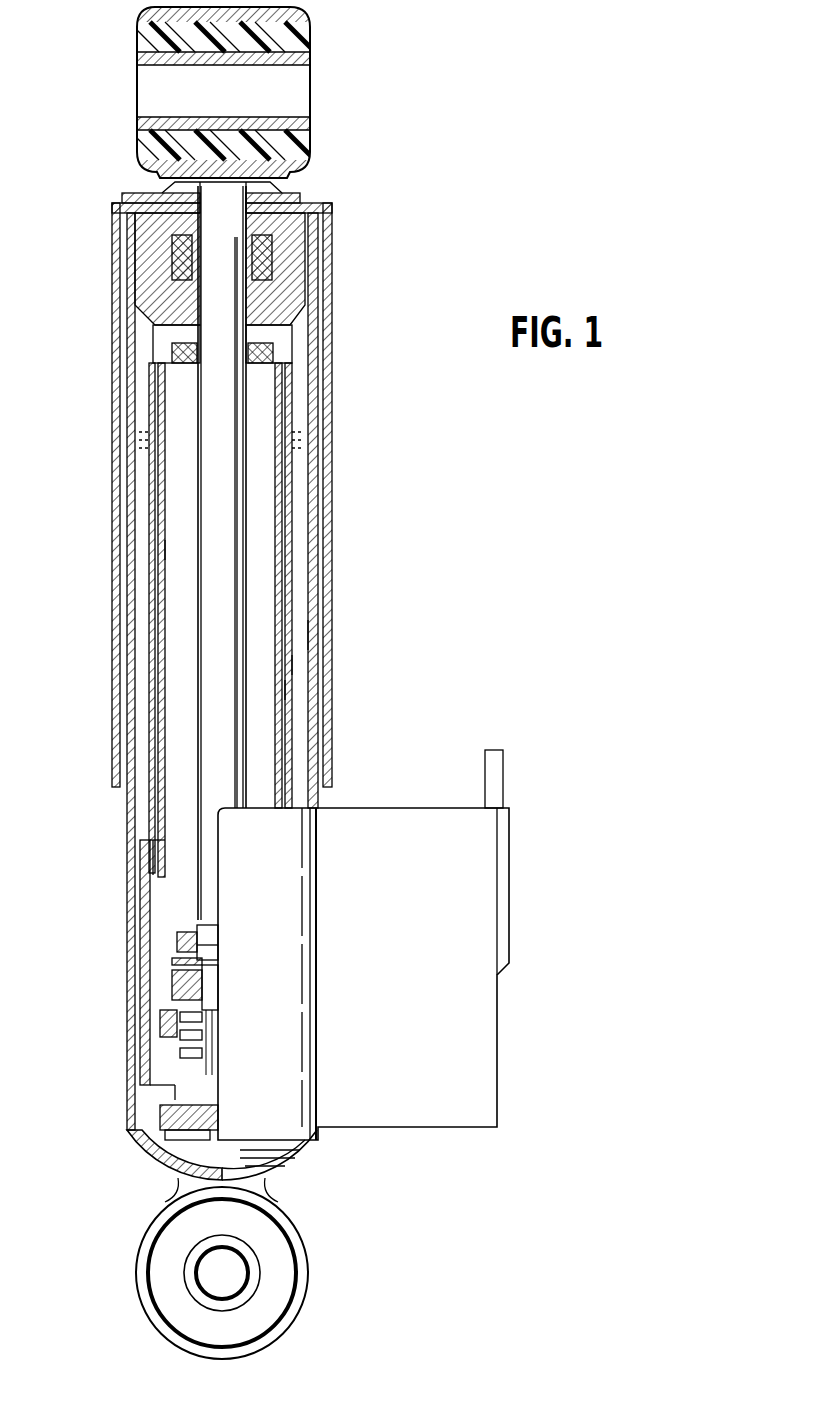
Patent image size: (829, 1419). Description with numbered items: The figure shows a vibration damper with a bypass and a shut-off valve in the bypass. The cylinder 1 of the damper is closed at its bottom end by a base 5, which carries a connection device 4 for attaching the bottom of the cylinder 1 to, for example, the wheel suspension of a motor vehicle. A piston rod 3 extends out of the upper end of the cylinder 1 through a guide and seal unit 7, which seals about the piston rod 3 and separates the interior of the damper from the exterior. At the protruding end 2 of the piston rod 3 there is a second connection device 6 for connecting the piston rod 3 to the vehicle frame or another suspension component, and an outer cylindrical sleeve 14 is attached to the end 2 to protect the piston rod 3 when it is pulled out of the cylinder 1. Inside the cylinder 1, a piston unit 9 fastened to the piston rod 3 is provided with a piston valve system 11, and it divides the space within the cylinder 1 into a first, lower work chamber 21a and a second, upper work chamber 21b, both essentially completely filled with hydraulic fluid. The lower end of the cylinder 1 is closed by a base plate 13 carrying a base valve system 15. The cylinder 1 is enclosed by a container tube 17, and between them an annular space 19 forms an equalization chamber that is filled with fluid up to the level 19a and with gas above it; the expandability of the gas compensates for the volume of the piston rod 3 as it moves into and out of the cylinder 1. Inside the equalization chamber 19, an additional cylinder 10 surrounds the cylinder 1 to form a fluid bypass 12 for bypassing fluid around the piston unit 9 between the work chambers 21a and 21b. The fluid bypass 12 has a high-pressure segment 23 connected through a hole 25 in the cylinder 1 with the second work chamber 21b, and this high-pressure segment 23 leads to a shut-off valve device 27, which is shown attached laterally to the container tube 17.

The cylinder 1 is at (290, 637).
The protruding end of the piston rod 2 is at (225, 203).
The piston rod 3 is at (228, 493).
The connection device 4 is at (296, 1237).
The base 5 is at (143, 1145).
The second connection device 6 is at (305, 48).
The guide and seal unit 7 is at (288, 304).
The piston unit 9 is at (170, 1002).
The additional cylinder 10 is at (292, 664).
The piston valve system 11 is at (172, 958).
The fluid bypass 12 is at (292, 688).
The base plate 13 is at (160, 1120).
The outer cylindrical sleeve 14 is at (112, 618).
The base valve system 15 is at (177, 1173).
The container tube 17 is at (313, 537).
The annular space 19 is at (297, 577).
The level 19a is at (143, 435).
The first work chamber 21a is at (173, 1065).
The second work chamber 21b is at (177, 548).
The high-pressure segment 23 is at (290, 409).
The hole 25 is at (285, 380).
The shut-off valve device 27 is at (405, 800).